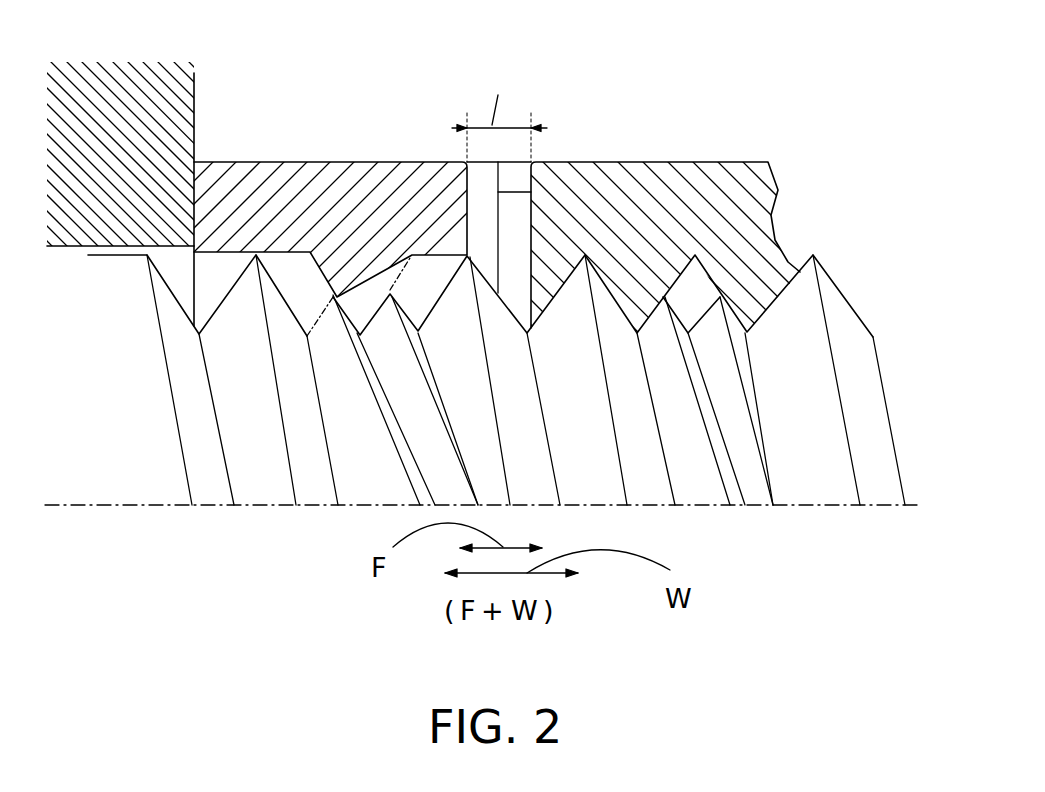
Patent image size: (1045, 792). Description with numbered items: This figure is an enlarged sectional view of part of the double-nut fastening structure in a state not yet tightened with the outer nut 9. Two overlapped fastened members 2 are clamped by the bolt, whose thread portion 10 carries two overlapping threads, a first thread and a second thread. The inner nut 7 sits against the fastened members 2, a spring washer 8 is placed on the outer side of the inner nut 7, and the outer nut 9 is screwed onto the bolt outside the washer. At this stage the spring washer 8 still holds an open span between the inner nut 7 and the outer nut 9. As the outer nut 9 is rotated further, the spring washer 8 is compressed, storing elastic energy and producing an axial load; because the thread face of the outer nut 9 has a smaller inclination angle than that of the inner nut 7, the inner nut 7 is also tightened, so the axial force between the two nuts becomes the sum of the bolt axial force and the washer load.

The fastened member 2 is at (175, 123).
The inner nut 7 is at (275, 197).
The spring washer 8 is at (515, 282).
The outer nut 9 is at (668, 185).
The thread portion 10 is at (840, 282).